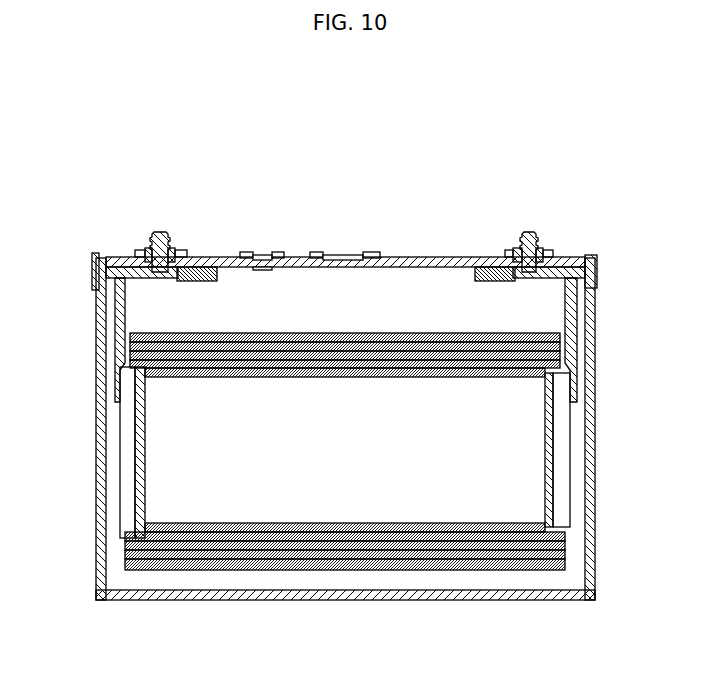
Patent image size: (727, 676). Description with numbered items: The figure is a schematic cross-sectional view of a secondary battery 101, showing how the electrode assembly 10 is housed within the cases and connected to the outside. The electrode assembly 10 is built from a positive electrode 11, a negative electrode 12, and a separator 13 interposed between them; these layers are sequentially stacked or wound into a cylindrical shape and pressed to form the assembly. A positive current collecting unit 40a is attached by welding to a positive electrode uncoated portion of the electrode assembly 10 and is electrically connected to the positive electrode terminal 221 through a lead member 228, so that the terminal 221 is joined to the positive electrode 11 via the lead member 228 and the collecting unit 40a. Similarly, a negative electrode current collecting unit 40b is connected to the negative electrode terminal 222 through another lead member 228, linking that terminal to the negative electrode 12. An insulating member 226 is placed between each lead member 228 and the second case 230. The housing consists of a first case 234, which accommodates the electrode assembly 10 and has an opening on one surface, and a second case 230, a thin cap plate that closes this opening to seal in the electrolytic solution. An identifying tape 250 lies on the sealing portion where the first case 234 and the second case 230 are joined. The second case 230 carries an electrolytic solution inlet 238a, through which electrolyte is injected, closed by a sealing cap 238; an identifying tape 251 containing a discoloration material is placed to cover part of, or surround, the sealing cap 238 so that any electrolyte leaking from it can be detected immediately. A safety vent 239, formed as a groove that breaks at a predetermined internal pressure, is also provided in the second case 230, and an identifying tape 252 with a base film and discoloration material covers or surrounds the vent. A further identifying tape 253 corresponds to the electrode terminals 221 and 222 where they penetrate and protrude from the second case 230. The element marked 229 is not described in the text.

The secondary battery 101 is at (584, 107).
The electrode assembly 10 is at (353, 489).
The positive electrode 11 is at (122, 560).
The negative electrode 12 is at (565, 560).
The separator 13 is at (317, 535).
The positive current collecting unit 40a is at (120, 485).
The negative electrode current collecting unit 40b is at (570, 493).
The electrode terminal 221 is at (160, 232).
The electrode terminal 222 is at (530, 232).
The insulating member 226 is at (585, 277).
The lead member 228 is at (568, 313).
The gasket 229 is at (540, 250).
The second case 230 is at (455, 257).
The first case 234 is at (592, 450).
The sealing cap 238 is at (263, 255).
The electrolytic solution inlet 238a is at (273, 270).
The safety vent 239 is at (345, 256).
The identifying tape 250 is at (597, 268).
The identifying tape 251 is at (282, 256).
The identifying tape 252 is at (374, 253).
The identifying tape 253 is at (553, 257).